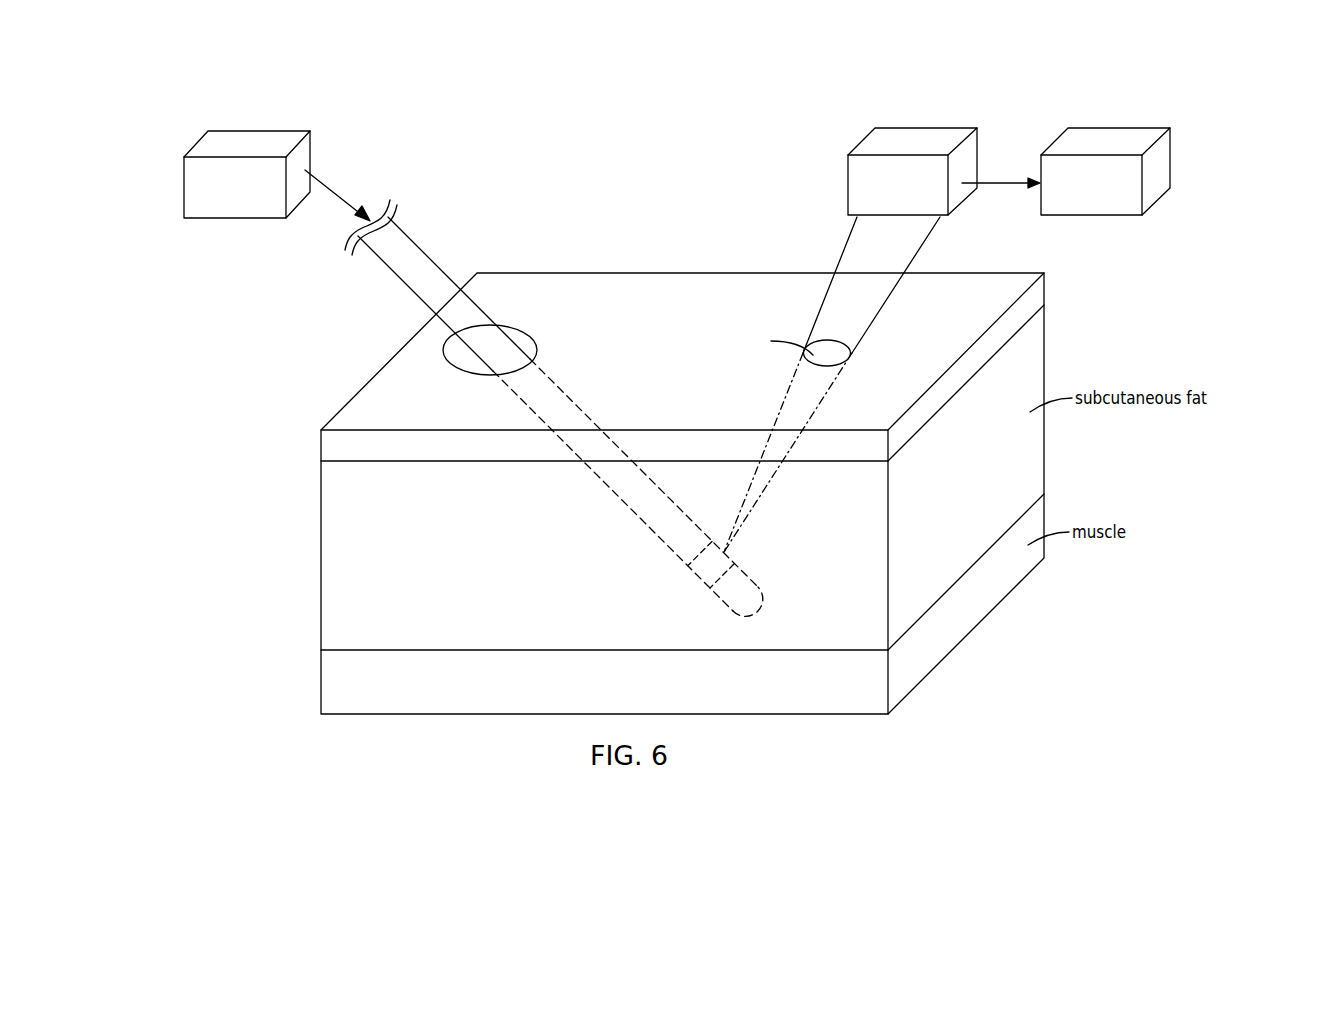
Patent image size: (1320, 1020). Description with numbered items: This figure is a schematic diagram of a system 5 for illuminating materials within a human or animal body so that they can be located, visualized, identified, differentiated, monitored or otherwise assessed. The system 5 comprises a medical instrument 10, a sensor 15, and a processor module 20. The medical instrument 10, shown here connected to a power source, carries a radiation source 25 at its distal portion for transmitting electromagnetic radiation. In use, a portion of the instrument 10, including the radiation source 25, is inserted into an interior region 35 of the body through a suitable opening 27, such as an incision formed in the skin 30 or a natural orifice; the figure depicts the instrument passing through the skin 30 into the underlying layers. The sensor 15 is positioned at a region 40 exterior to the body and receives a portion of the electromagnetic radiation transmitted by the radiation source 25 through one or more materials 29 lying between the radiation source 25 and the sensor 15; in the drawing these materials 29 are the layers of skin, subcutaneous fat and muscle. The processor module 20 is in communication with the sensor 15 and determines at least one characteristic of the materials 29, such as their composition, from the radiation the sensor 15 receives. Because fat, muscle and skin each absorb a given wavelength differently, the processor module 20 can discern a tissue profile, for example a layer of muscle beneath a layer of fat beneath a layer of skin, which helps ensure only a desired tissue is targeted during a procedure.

The system 5 is at (1005, 78).
The medical instrument 10 is at (554, 408).
The sensor 15 is at (910, 132).
The processor module 20 is at (1093, 132).
The radiation source 25 is at (704, 577).
The opening 27 is at (522, 342).
The materials 29 is at (1212, 273).
The skin 30 is at (1030, 302).
The interior region 35 is at (820, 574).
The region exterior to the body 40 is at (979, 249).